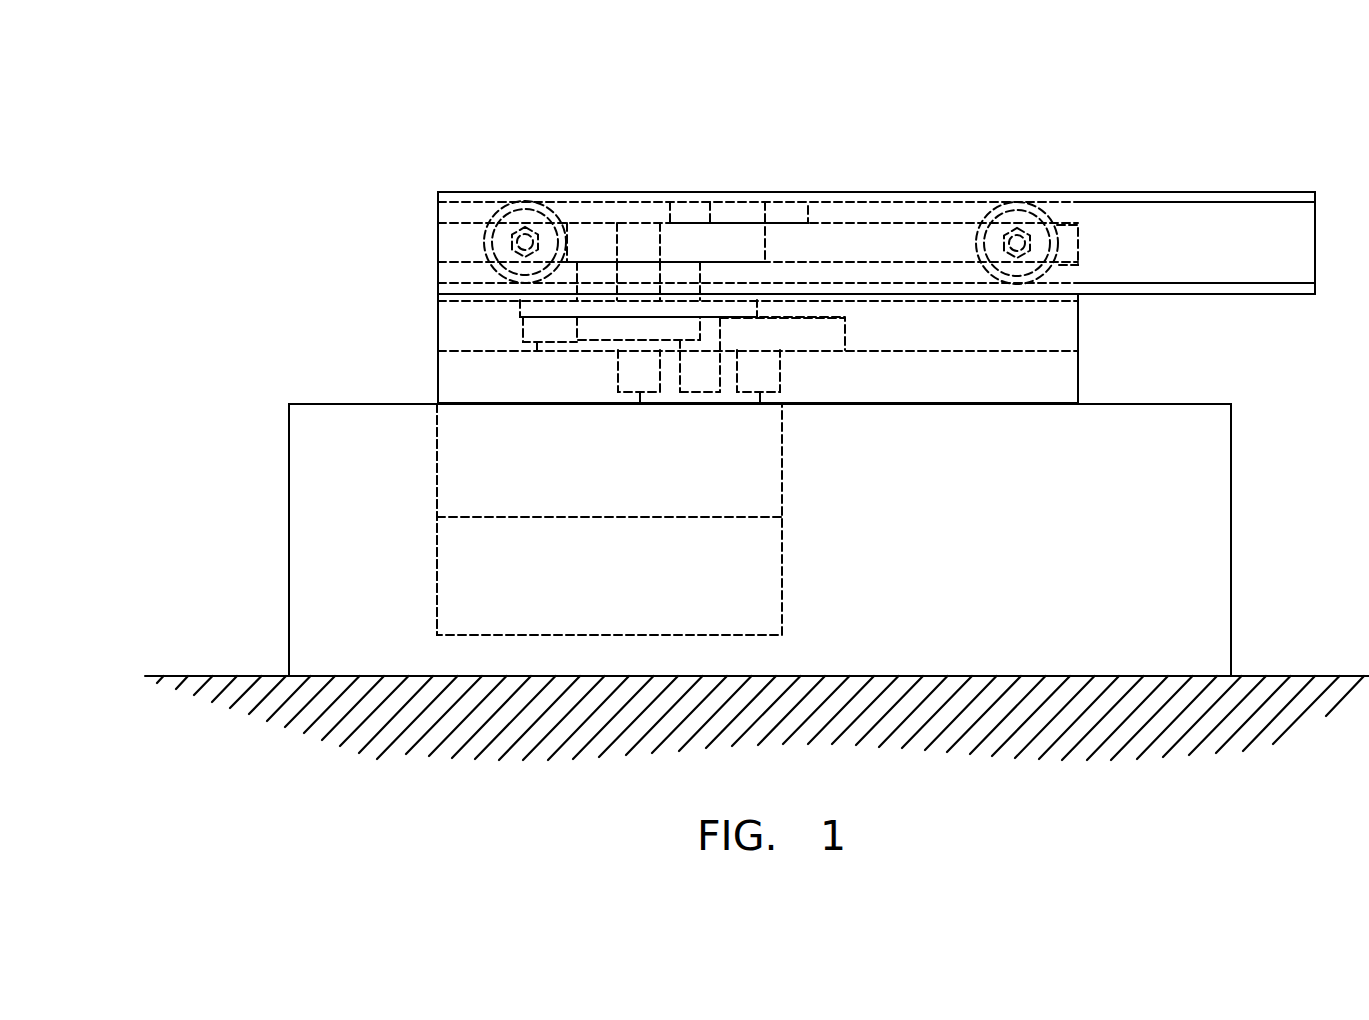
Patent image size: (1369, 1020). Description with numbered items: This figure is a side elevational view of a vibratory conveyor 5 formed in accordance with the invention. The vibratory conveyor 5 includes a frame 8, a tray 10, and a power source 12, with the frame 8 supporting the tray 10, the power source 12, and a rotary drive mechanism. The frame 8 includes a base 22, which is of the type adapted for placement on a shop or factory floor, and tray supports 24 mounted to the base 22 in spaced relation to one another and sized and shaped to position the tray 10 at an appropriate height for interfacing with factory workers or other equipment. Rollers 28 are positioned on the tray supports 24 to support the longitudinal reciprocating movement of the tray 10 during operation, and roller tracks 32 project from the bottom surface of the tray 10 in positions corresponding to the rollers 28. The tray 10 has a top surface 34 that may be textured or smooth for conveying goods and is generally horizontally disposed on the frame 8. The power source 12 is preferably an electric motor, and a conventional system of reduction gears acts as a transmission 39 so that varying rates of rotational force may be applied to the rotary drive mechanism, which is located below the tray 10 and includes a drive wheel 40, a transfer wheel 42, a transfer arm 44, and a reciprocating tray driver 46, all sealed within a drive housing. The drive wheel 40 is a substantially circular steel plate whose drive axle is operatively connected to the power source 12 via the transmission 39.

The vibratory conveyor 5 is at (922, 104).
The frame 8 is at (1100, 384).
The tray 10 is at (560, 188).
The power source 12 is at (426, 557).
The base 22 is at (1231, 486).
The tray supports 24 is at (1070, 248).
The rollers 28 is at (490, 215).
The roller tracks 32 is at (1248, 245).
The top surface 34 is at (927, 192).
The transmission 39 is at (433, 463).
The drive wheel 40 is at (862, 316).
The transfer wheel 42 is at (496, 313).
The transfer arm 44 is at (782, 235).
The reciprocating tray driver 46 is at (655, 212).